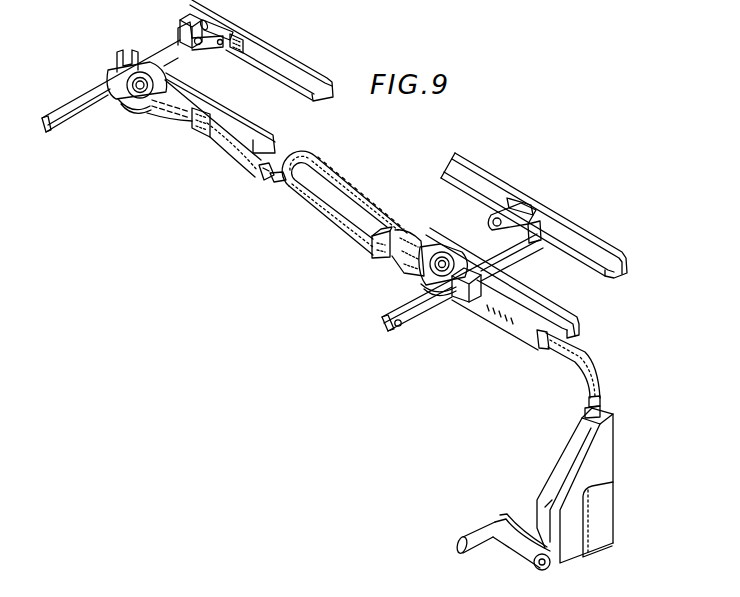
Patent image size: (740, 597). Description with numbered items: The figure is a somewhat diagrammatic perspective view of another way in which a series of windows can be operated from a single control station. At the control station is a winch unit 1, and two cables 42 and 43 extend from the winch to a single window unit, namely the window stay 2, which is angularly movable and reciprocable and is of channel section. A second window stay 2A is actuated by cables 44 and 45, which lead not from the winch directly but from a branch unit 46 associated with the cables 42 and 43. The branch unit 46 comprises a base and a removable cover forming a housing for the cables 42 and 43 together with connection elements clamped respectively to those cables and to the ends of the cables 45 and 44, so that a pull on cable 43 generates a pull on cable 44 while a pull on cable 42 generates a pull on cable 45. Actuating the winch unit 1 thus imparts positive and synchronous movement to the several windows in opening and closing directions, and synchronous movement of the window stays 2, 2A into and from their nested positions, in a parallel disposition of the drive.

The winch unit 1 is at (619, 516).
The window stay 2 is at (80, 104).
The window stay 2A is at (403, 305).
The cable 42 is at (277, 168).
The cable 43 is at (274, 175).
The cable 44 is at (348, 195).
The cable 45 is at (378, 210).
The branch unit 46 is at (477, 307).